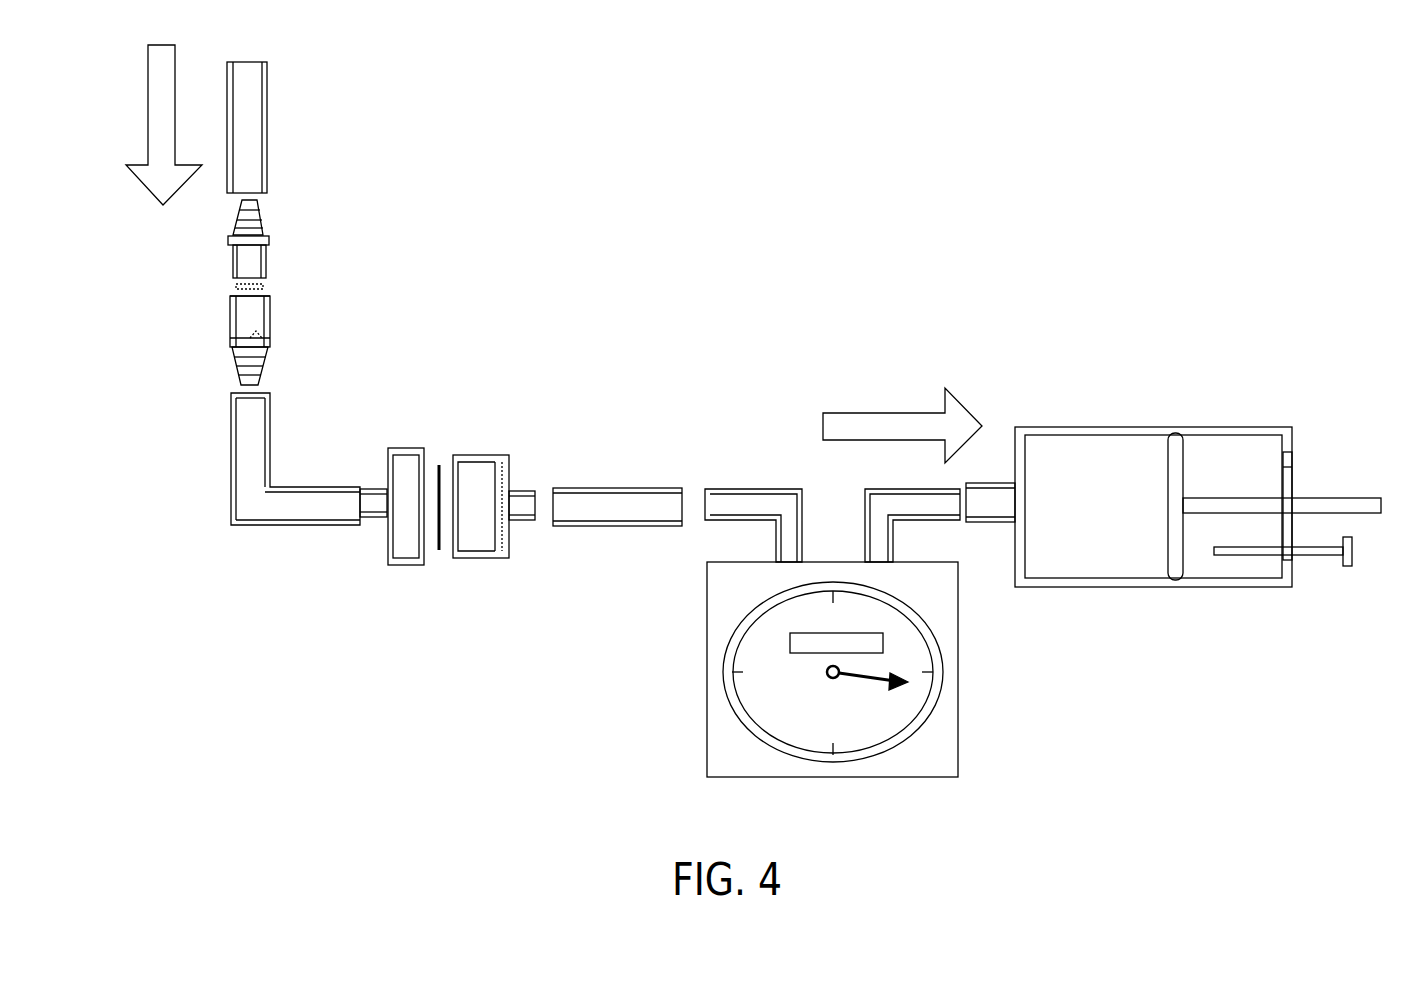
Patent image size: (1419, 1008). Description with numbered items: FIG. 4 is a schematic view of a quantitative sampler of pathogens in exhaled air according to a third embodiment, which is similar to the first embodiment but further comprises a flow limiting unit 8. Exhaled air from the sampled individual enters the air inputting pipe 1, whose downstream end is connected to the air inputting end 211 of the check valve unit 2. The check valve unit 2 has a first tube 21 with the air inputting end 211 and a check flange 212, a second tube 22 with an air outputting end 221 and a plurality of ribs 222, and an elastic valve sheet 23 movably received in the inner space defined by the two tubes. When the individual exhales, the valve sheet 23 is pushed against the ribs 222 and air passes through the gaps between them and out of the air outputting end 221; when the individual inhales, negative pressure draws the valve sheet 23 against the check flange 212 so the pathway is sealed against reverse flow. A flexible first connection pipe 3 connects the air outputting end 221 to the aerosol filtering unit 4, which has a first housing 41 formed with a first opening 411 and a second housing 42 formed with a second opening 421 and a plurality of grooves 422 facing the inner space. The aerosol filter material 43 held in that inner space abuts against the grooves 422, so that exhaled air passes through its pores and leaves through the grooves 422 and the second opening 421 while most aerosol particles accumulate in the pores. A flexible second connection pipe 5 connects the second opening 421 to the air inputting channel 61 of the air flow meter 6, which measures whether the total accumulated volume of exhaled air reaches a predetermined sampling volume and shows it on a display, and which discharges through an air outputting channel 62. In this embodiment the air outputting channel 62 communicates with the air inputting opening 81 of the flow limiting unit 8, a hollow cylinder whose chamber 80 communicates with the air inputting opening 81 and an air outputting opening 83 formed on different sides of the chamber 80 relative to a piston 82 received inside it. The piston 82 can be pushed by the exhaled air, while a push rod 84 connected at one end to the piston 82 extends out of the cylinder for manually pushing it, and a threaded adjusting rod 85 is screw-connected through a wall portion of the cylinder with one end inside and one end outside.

The air inputting pipe 1 is at (266, 118).
The check valve unit 2 is at (337, 254).
The first tube 21 is at (233, 265).
The air inputting end 211 is at (258, 215).
The check flange 212 is at (230, 296).
The second tube 22 is at (228, 337).
The air outputting end 221 is at (262, 367).
The ribs 222 is at (267, 333).
The valve sheet 23 is at (266, 285).
The first connection pipe 3 is at (271, 470).
The aerosol filtering unit 4 is at (467, 423).
The first housing 41 is at (410, 565).
The first opening 411 is at (378, 517).
The second housing 42 is at (487, 558).
The second opening 421 is at (533, 520).
The grooves 422 is at (502, 477).
The aerosol filter material 43 is at (440, 552).
The second connection pipe 5 is at (625, 488).
The air flow meter 6 is at (987, 647).
The air inputting channel 61 is at (747, 489).
The air outputting channel 62 is at (945, 520).
The flow limiting unit 8 is at (1113, 427).
The chamber 80 is at (1130, 570).
The air inputting opening 81 is at (985, 483).
The piston 82 is at (1183, 562).
The air outputting opening 83 is at (1290, 447).
The push rod 84 is at (1348, 498).
The adjusting rod 85 is at (1322, 555).